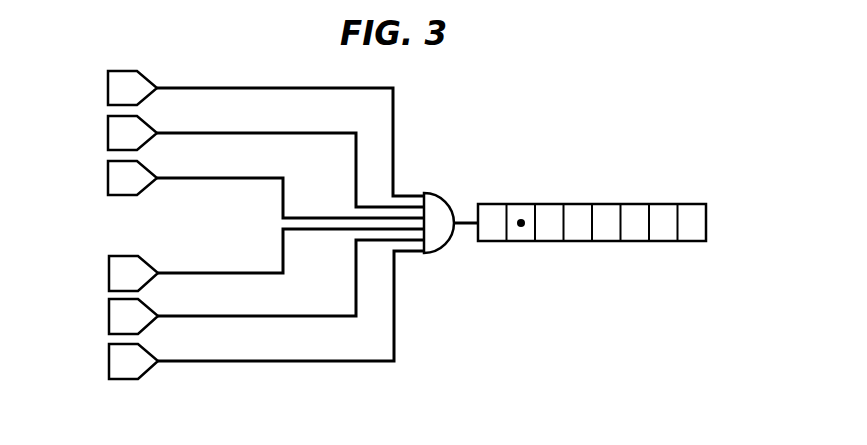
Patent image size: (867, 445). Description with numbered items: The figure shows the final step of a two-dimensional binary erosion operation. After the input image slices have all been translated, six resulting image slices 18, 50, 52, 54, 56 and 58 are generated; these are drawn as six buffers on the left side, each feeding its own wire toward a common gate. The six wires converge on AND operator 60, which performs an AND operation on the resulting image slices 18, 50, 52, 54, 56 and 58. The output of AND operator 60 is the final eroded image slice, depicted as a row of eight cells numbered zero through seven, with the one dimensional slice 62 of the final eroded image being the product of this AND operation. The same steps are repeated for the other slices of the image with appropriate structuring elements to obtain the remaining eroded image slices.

The resulting image slice 18 is at (108, 85).
The resulting image slice 50 is at (108, 130).
The resulting image slice 52 is at (108, 175).
The resulting image slice 54 is at (109, 270).
The resulting image slice 56 is at (109, 313).
The resulting image slice 58 is at (109, 358).
The AND operator 60 is at (446, 246).
The one dimensional slice 62 is at (705, 242).